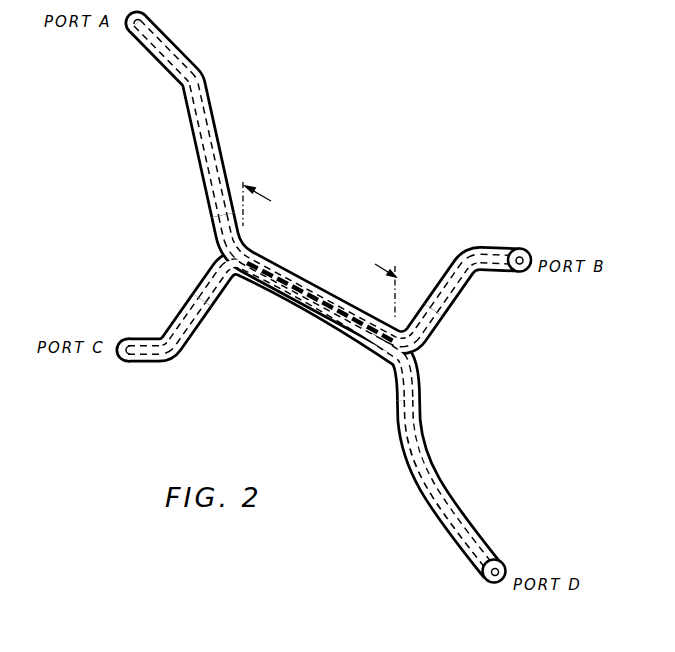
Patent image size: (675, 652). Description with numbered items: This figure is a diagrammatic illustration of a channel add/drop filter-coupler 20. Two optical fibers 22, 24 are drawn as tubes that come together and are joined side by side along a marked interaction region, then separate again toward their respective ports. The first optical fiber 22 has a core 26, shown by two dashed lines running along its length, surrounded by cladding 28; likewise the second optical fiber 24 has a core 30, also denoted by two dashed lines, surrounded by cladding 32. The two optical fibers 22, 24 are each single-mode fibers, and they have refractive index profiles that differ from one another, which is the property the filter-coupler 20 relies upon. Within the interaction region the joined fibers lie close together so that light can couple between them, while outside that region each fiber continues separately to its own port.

The filter-coupler 20 is at (282, 326).
The optical fiber 22 is at (192, 57).
The optical fiber 24 is at (137, 358).
The core 26 is at (521, 271).
The cladding 28 is at (491, 267).
The core 30 is at (499, 581).
The cladding 32 is at (478, 510).